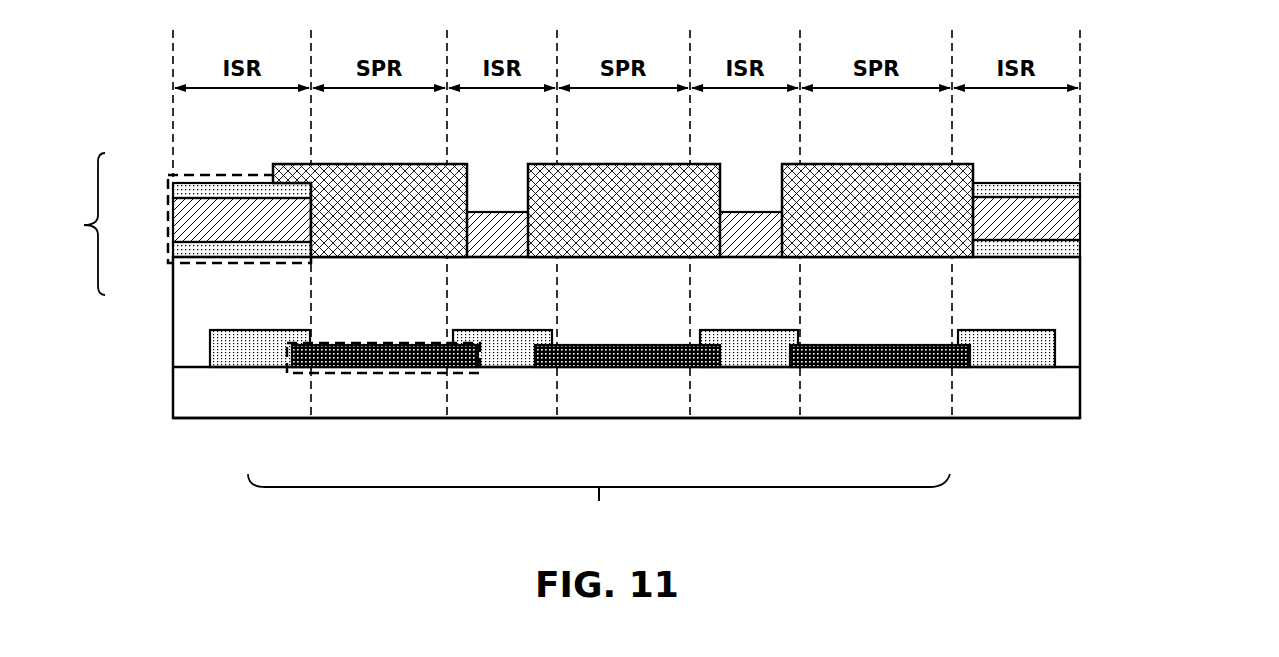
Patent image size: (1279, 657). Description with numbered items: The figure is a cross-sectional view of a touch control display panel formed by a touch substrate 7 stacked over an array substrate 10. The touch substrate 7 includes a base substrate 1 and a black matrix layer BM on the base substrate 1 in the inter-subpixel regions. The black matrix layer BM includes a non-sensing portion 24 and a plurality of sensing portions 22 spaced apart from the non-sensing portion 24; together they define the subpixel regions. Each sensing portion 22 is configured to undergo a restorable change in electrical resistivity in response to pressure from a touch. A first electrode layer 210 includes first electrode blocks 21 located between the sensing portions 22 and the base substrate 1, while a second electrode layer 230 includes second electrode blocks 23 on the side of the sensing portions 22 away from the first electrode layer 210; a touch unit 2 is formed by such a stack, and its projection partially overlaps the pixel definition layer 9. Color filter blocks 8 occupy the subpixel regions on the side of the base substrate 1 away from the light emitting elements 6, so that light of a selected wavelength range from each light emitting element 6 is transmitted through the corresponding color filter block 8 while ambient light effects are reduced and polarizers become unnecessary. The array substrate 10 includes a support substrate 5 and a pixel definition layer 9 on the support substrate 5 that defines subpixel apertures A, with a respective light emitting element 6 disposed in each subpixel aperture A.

The base substrate 1 is at (192, 306).
The touch unit 2 is at (226, 170).
The support substrate 5 is at (967, 388).
The light emitting element 6 is at (383, 368).
The touch substrate 7 is at (82, 224).
The color filter block 8 is at (385, 190).
The pixel definition layer 9 is at (244, 352).
The array substrate 10 is at (599, 509).
The first electrode block 21 is at (186, 248).
The sensing portion 22 is at (186, 220).
The second electrode block 23 is at (186, 192).
The non-sensing portion 24 is at (750, 226).
The first electrode layer 210 is at (1068, 247).
The second electrode layer 230 is at (1068, 189).
The black matrix layer BM is at (1068, 218).
The subpixel aperture A is at (437, 342).